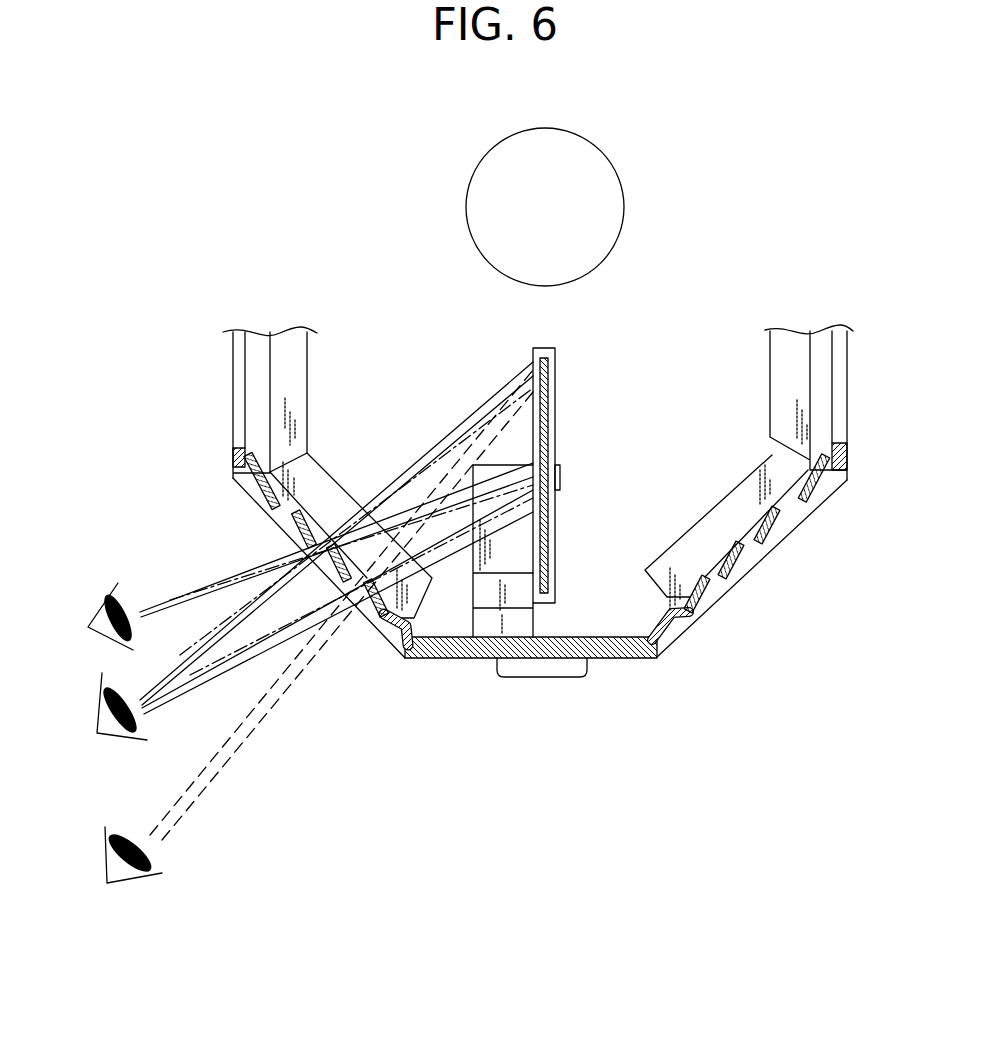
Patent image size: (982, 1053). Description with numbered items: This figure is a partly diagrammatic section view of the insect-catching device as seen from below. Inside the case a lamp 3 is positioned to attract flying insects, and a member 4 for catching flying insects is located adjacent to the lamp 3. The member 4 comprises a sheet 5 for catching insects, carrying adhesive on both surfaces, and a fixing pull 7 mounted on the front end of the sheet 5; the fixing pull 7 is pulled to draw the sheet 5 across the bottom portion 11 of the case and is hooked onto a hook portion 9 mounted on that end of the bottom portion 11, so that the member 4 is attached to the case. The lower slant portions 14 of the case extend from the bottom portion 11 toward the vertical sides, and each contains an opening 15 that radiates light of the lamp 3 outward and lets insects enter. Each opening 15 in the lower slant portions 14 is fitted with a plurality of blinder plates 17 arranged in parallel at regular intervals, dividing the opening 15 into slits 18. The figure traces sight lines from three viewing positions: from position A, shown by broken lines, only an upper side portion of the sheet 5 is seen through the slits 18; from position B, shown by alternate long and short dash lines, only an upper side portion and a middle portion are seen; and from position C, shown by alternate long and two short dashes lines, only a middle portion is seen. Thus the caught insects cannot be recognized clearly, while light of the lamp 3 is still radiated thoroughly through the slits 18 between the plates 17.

The lamp 3 is at (620, 233).
The member for catching flying insects 4 is at (578, 475).
The sheet for catching insects 5 is at (547, 403).
The fixing pull 7 is at (557, 445).
The hook portion 9 is at (505, 550).
The bottom portion 11 is at (468, 658).
The lower slant portions 14 is at (356, 620).
The openings 15 is at (838, 427).
The blinder plates 17 is at (820, 508).
The slits 18 is at (750, 543).
The position A is at (299, 643).
The position B is at (295, 569).
The position C is at (294, 556).